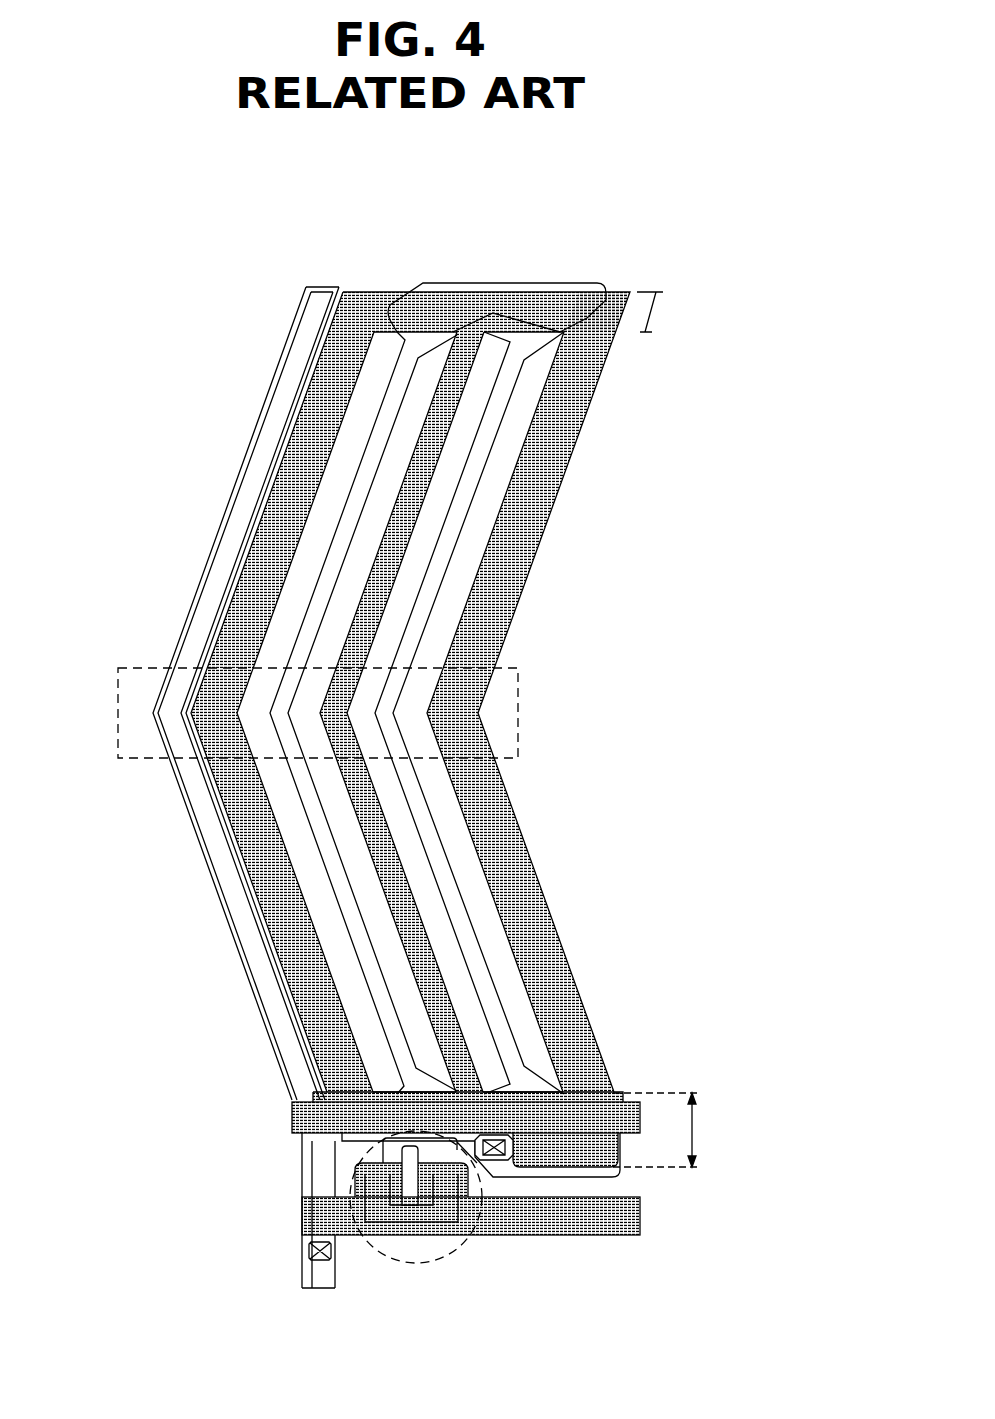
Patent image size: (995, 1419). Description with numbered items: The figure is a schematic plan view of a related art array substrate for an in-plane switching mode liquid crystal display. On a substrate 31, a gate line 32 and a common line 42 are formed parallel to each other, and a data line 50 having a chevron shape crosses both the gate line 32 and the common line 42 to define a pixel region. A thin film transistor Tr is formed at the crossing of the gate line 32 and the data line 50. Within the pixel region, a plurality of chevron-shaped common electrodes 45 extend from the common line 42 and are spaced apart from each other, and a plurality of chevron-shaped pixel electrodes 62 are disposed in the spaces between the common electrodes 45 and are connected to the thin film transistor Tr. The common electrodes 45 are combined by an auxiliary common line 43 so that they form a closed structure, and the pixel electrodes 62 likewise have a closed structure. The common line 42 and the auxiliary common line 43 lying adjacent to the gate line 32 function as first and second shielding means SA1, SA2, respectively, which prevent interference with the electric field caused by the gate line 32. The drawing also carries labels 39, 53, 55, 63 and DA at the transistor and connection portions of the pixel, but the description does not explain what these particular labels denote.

The substrate 31 is at (616, 256).
The gate line 32 is at (583, 1236).
The drain electrode 39 is at (460, 1237).
The common line 42 is at (640, 1102).
The auxiliary common line 43 is at (371, 300).
The common electrodes 45 is at (510, 572).
The data line 50 is at (232, 909).
The source electrode 53 is at (447, 1243).
The drain contact portion 55 is at (610, 1175).
The pixel electrodes 62 is at (485, 450).
The storage electrode 63 is at (517, 283).
The thin film transistor Tr is at (423, 1260).
The disclination area DA is at (518, 715).
The first shielding means SA1 is at (672, 1130).
The second shielding means SA2 is at (662, 312).